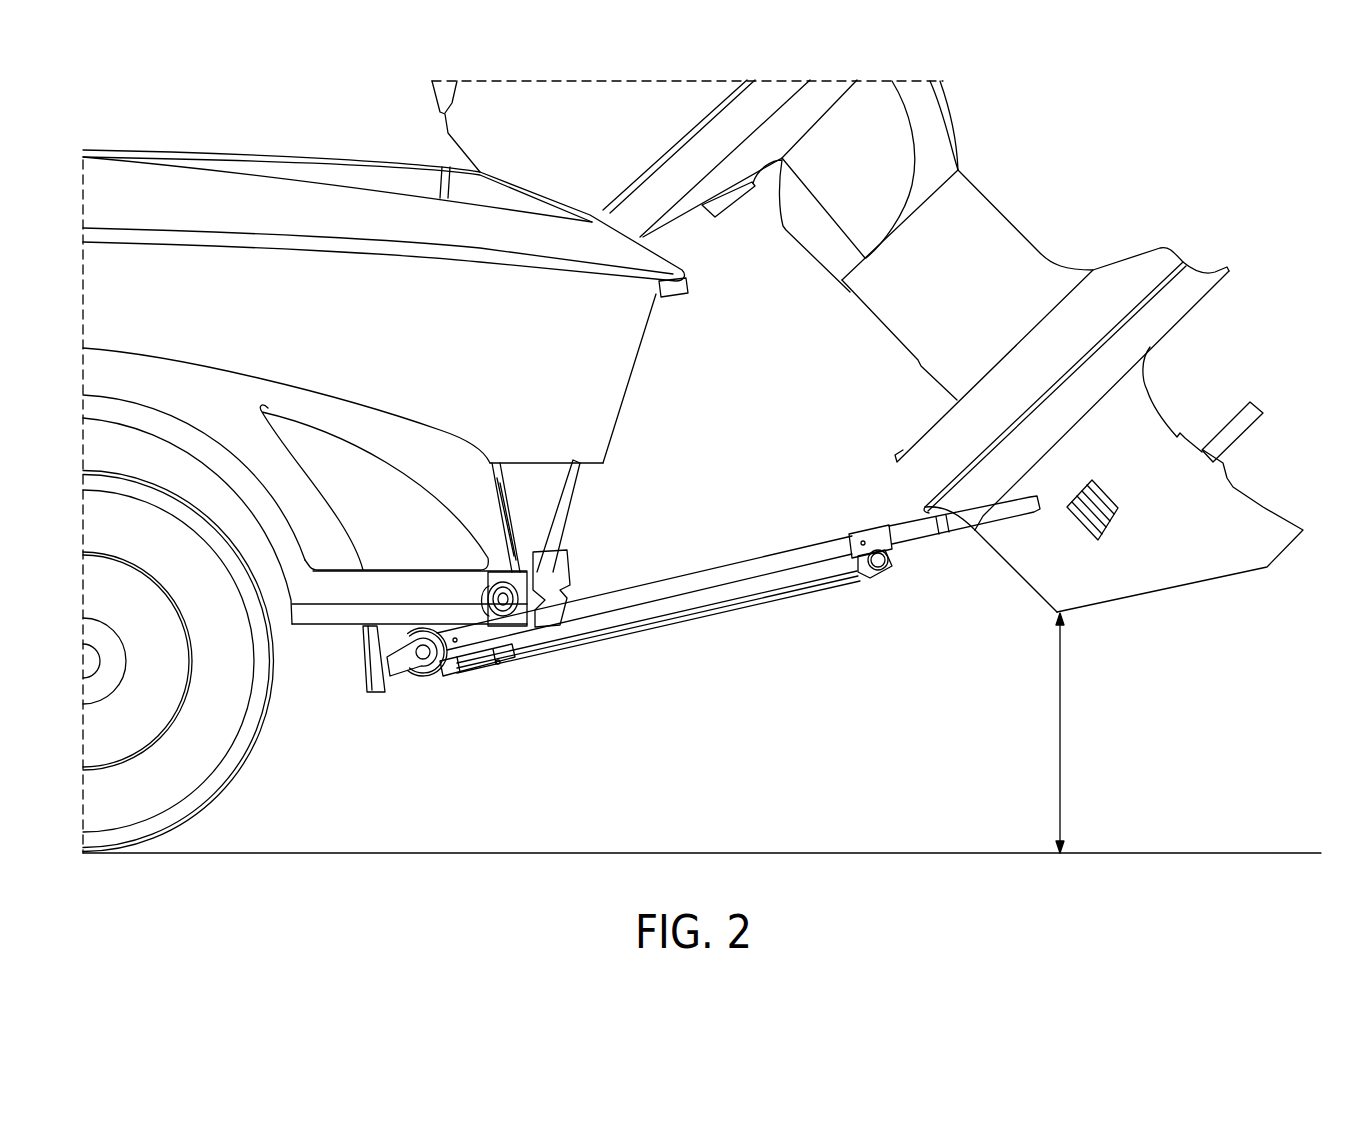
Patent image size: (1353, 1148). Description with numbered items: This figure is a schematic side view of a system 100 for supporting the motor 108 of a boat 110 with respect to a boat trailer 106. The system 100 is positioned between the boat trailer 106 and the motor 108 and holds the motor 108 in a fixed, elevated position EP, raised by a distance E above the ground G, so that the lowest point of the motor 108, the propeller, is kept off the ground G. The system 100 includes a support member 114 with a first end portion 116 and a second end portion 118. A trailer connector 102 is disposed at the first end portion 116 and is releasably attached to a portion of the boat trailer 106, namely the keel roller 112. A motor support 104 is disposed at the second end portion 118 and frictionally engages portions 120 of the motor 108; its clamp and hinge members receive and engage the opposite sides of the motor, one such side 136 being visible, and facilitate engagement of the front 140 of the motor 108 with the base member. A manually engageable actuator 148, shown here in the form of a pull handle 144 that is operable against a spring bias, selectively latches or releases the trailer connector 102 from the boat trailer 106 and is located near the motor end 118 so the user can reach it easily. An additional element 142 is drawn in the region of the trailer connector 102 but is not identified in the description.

The system 100 is at (710, 640).
The trailer connector 102 is at (440, 700).
The motor support 104 is at (960, 562).
The boat trailer 106 is at (307, 607).
The motor 108 is at (1005, 240).
The boat 110 is at (315, 233).
The keel roller 112 is at (425, 672).
The support member 114 is at (730, 567).
The first end portion 116 is at (470, 635).
The second end portion 118 is at (923, 542).
The portions of the motor 120 is at (1013, 540).
The opposite side of the motor 136 is at (1052, 575).
The front of the motor 140 is at (985, 545).
The clamp block 142 is at (470, 679).
The pull handle 144 is at (890, 530).
The manually engageable actuator 148 is at (880, 577).
The elevated position EP is at (1137, 413).
The distance E is at (1069, 733).
The ground G is at (1229, 848).